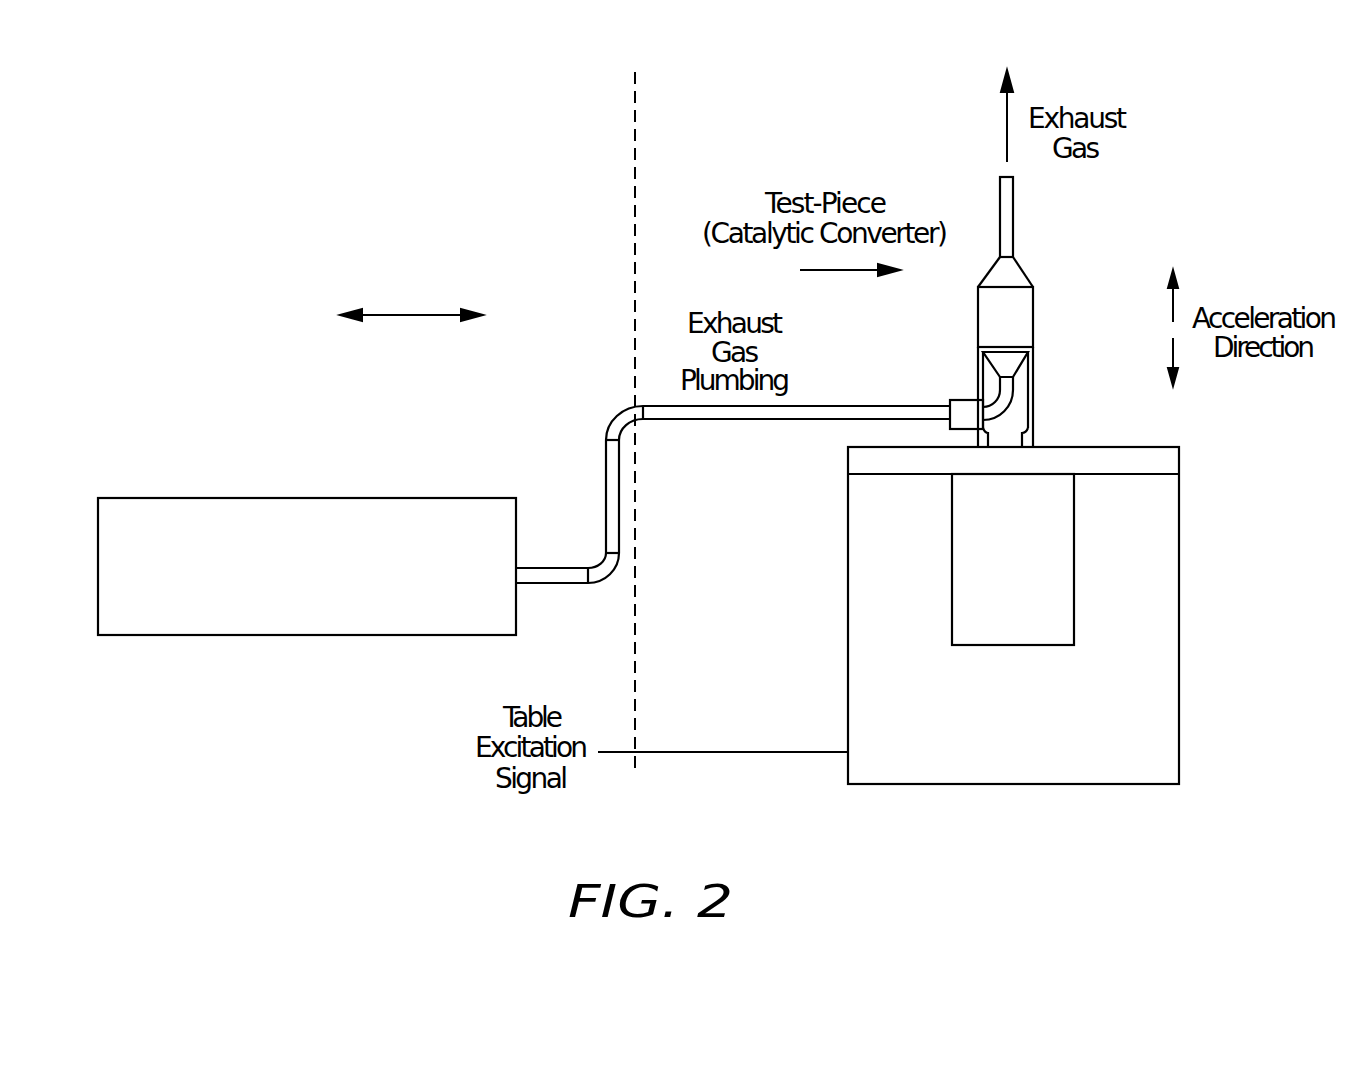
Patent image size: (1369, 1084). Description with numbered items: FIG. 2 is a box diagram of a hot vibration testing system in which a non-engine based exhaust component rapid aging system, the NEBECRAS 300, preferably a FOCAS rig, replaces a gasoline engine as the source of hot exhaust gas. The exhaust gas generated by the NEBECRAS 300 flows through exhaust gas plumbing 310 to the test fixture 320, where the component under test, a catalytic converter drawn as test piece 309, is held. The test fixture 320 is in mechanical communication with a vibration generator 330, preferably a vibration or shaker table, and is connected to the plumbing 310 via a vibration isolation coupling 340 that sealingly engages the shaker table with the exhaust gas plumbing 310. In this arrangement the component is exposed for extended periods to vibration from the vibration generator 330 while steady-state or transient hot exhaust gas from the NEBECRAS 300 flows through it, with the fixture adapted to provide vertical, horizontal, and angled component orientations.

The NEBECRAS 300 is at (177, 498).
The plumbing 310 is at (606, 483).
The test piece (catalytic converter) 309 is at (978, 322).
The vibration isolation coupling 340 is at (1037, 385).
The test fixture 320 is at (1035, 433).
The vibration generator 330 is at (1179, 462).